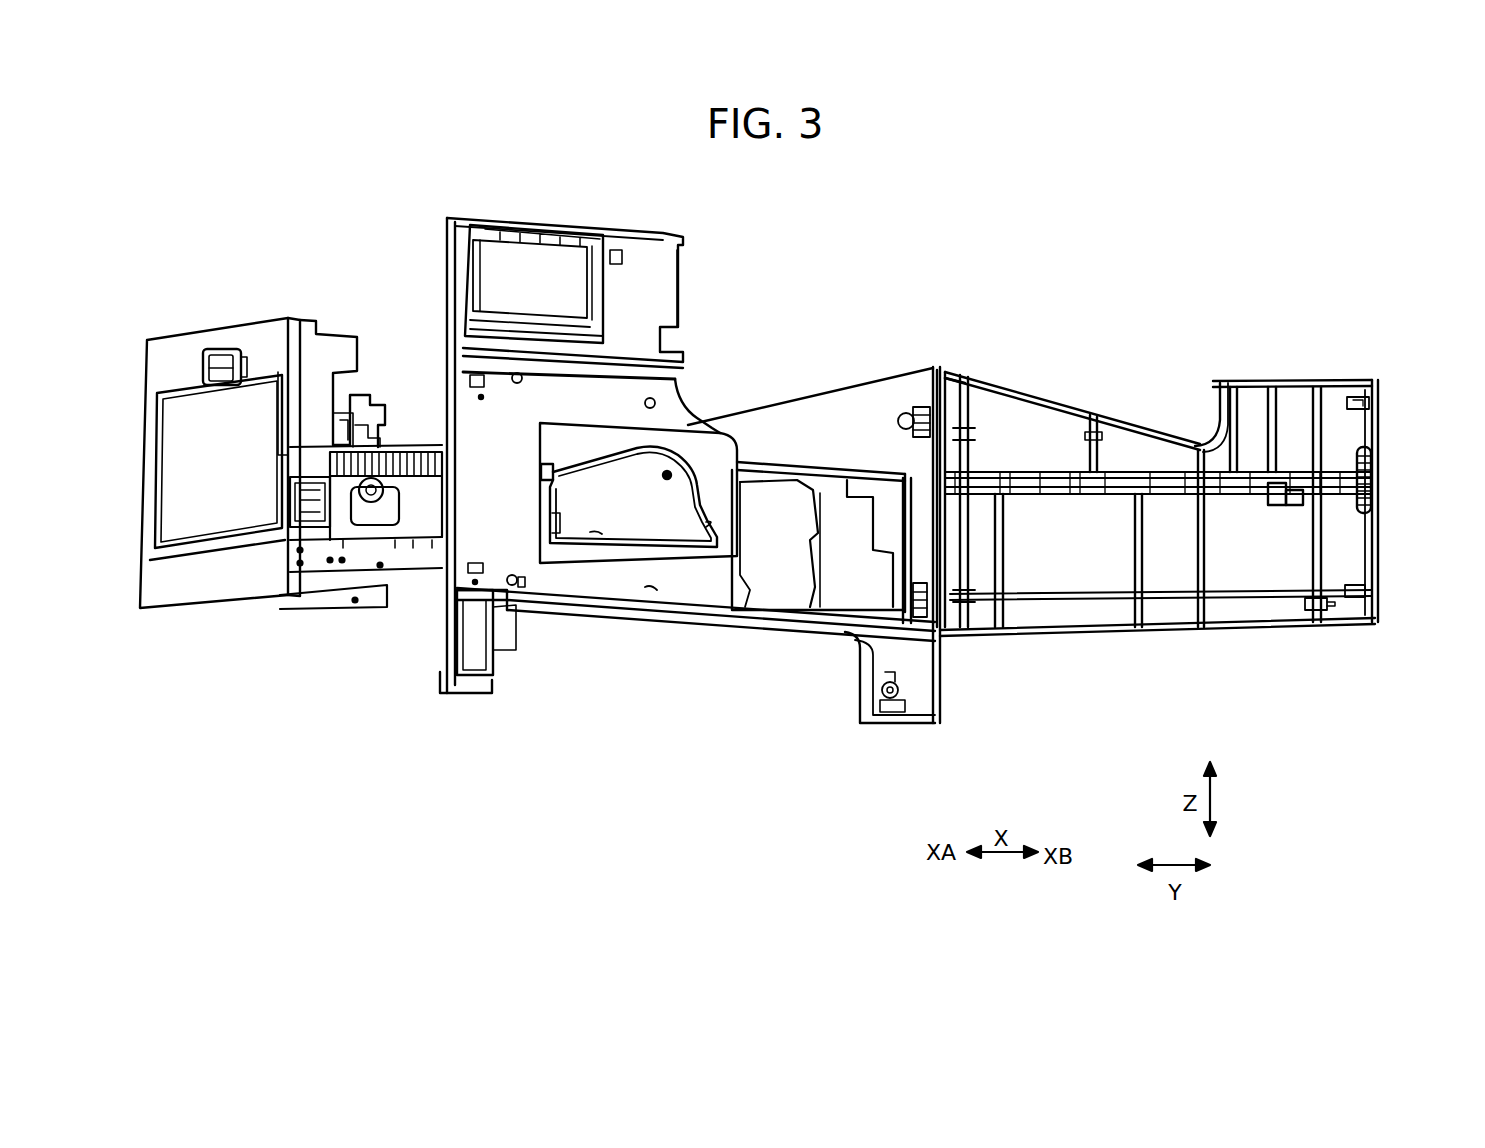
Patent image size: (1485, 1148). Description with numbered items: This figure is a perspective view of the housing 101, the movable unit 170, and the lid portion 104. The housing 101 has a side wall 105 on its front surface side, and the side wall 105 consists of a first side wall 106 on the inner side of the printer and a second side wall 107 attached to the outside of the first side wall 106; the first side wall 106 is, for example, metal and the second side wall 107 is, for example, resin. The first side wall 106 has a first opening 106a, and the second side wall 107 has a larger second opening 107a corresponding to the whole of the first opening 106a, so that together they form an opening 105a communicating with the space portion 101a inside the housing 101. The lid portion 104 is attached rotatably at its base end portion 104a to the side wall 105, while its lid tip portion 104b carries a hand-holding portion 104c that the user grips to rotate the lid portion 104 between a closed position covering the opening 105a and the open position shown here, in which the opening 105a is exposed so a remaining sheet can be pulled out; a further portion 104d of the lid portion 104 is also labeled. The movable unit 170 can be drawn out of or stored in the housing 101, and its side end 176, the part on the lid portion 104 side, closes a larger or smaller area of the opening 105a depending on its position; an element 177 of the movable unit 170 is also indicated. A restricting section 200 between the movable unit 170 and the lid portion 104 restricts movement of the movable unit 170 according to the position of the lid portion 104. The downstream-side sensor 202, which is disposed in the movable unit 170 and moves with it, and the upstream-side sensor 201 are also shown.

The movable unit 170 is at (250, 322).
The guide member 177 is at (408, 457).
The side end 176 is at (415, 522).
The housing 101 is at (630, 232).
The space portion 101a is at (667, 475).
The opening 105a is at (558, 672).
The downstream-side sensor 202 is at (553, 474).
The upstream-side sensor 201 is at (633, 496).
The restricting section 200 is at (650, 521).
The first opening 106a is at (597, 532).
The second opening 107a is at (651, 588).
The side wall 105 is at (730, 700).
The first side wall 106 is at (768, 615).
The second side wall 107 is at (832, 617).
The lid portion 104 is at (1225, 382).
The base end portion 104a is at (948, 372).
The lid tip portion 104b is at (1345, 392).
The hand-holding portion 104c is at (1350, 505).
The tray projection 104d is at (1280, 505).